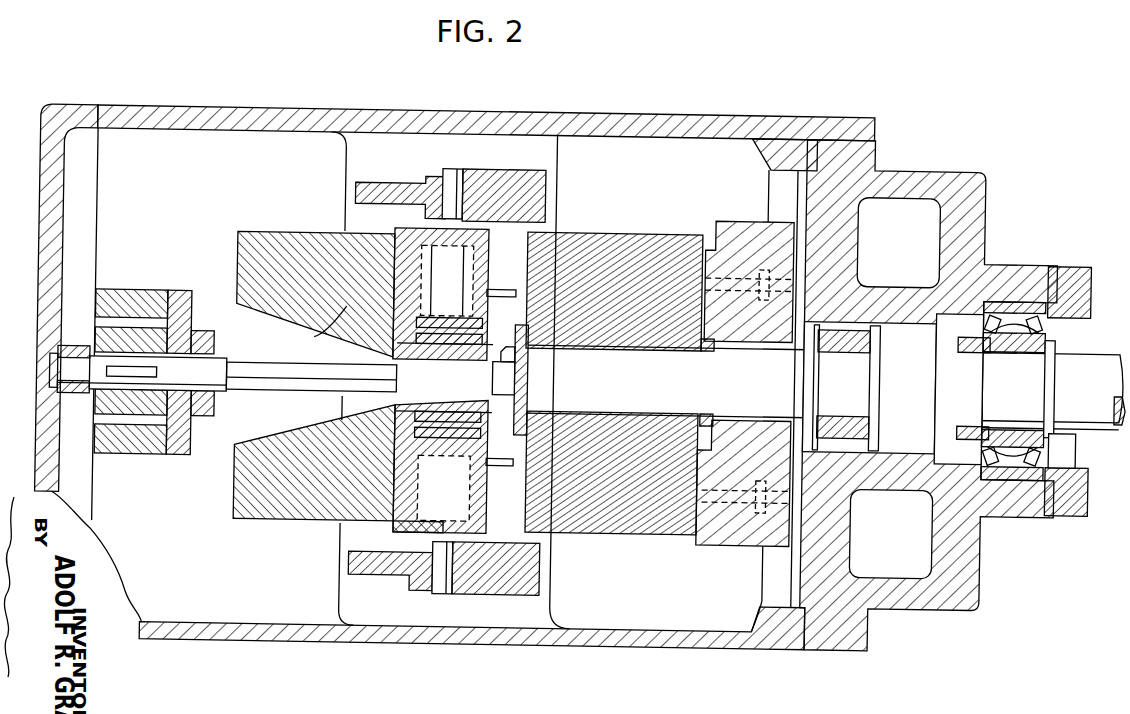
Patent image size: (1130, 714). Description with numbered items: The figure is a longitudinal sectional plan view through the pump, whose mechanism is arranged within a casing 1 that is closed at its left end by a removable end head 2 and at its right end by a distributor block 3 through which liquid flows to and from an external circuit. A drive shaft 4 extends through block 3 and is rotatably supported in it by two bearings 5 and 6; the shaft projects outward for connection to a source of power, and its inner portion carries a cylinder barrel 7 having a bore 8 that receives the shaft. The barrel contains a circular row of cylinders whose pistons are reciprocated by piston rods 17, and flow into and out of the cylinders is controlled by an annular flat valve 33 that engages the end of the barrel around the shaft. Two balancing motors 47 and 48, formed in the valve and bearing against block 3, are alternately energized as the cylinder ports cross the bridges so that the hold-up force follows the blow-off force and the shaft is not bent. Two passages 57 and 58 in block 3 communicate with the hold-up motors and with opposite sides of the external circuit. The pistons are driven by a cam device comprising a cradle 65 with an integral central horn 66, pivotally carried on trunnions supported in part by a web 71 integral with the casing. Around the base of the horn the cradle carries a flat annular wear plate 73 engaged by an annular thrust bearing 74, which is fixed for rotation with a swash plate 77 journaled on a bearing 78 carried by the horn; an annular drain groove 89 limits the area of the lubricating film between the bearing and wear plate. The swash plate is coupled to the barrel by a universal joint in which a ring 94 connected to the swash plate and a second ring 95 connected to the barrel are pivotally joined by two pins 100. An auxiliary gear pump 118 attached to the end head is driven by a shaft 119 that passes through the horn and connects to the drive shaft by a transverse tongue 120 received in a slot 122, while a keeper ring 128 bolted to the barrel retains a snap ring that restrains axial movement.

The casing 1 is at (165, 108).
The end head 2 is at (78, 110).
The distributor block 3 is at (982, 236).
The drive shaft 4 is at (1075, 396).
The bearing 5 is at (1033, 347).
The bearing 6 is at (860, 348).
The cylinder barrel 7 is at (652, 232).
The bore 8 is at (673, 354).
The piston rod 17 is at (493, 286).
The annular flat valve 33 is at (800, 232).
The balancing motor 47 is at (762, 258).
The balancing motor 48 is at (765, 510).
The passage 57 is at (874, 546).
The passage 58 is at (879, 248).
The cradle 65 is at (270, 512).
The horn 66 is at (352, 418).
The web 71 is at (345, 603).
The wear plate 73 is at (352, 302).
The thrust bearing 74 is at (387, 292).
The swash plate 77 is at (413, 232).
The bearing 78 is at (448, 356).
The drain groove 89 is at (360, 500).
The ring 94 is at (398, 572).
The ring 95 is at (470, 600).
The pin 100 is at (452, 172).
The gear pump 118 is at (112, 262).
The shaft 119 is at (280, 364).
The tongue 120 is at (519, 376).
The slot 122 is at (520, 350).
The keeper ring 128 is at (530, 393).